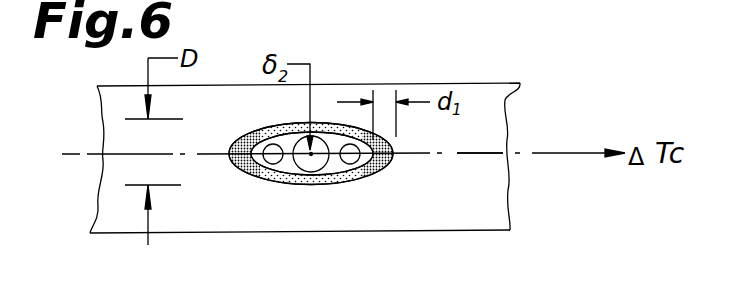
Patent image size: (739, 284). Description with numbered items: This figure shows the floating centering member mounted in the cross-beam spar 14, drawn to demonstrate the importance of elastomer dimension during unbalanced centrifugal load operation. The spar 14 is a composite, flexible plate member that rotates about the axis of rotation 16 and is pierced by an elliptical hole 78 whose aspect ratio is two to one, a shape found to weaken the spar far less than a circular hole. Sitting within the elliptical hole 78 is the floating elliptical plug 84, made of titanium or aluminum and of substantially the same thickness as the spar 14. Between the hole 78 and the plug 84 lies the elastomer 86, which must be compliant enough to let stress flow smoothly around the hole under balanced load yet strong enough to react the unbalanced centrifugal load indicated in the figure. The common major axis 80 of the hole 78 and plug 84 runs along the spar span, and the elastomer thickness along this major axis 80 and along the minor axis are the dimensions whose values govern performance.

The cross-beam spar 14 is at (497, 97).
The axis of rotation 16 is at (311, 156).
The elliptical hole 78 is at (263, 127).
The major axis 80 is at (481, 153).
The floating elliptical plug 84 is at (283, 167).
The elastomer 86 is at (375, 172).